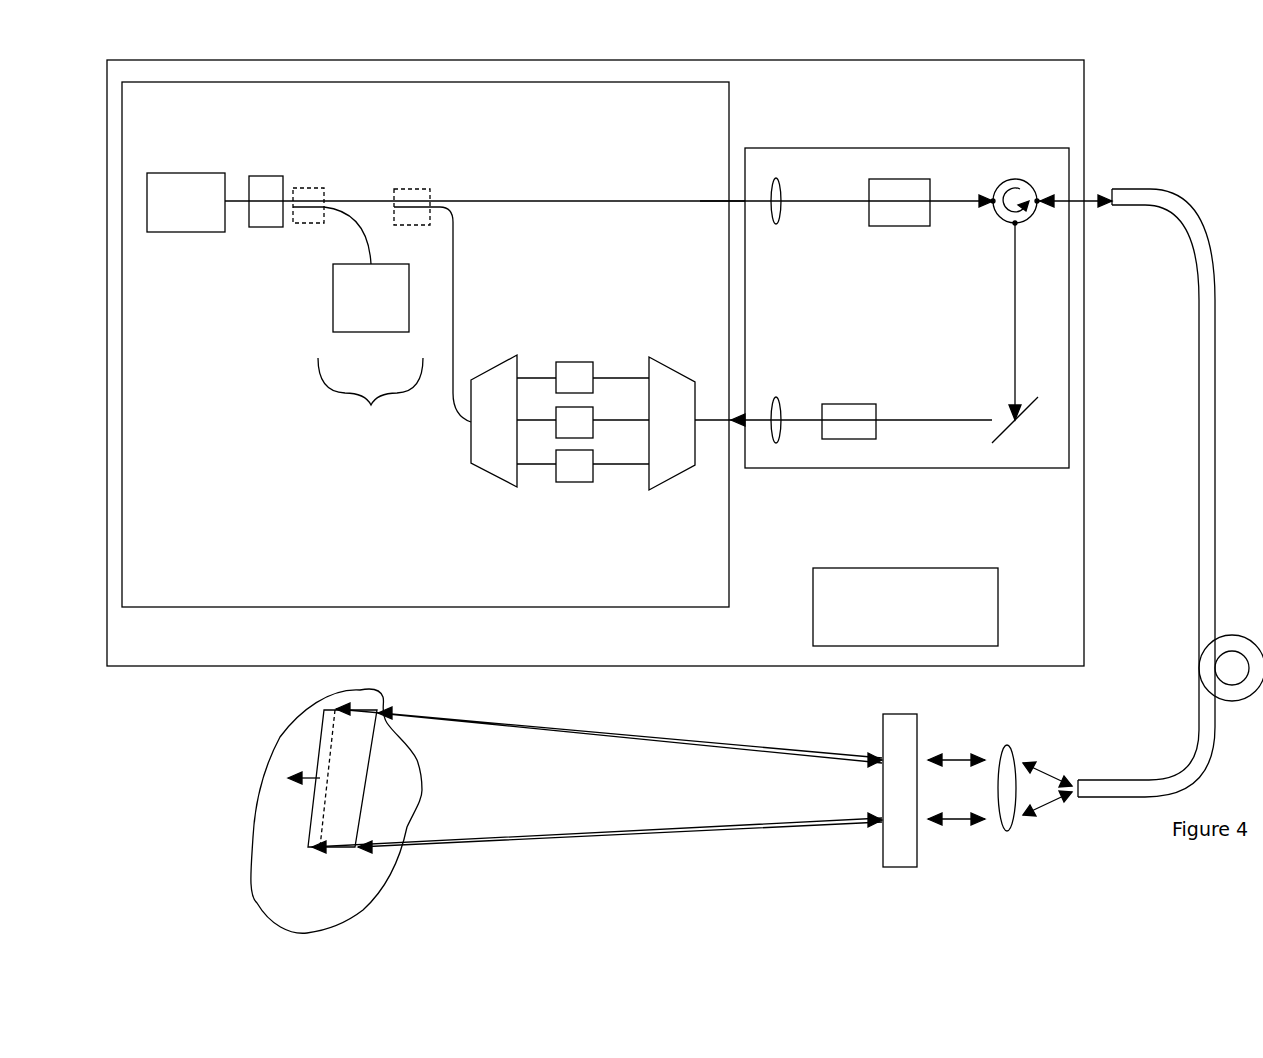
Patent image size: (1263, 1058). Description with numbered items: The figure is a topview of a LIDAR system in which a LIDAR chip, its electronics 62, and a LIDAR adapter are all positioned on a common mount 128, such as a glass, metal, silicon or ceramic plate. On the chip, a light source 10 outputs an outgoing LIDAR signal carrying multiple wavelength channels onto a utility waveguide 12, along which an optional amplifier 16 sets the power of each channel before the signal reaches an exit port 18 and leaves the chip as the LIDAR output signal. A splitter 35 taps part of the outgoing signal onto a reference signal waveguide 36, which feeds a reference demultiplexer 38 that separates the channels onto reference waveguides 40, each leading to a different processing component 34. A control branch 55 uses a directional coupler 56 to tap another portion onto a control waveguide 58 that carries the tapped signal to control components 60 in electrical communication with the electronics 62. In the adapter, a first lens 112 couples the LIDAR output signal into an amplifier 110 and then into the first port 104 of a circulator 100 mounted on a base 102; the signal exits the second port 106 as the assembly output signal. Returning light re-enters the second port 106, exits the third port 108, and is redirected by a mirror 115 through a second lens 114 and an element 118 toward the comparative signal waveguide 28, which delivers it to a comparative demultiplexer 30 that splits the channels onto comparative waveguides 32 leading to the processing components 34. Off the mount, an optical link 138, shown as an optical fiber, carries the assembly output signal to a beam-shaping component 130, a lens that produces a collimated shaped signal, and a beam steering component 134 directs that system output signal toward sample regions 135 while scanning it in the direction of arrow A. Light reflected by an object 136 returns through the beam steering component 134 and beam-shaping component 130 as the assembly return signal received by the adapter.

The light source 10 is at (167, 232).
The utility waveguide 12 is at (636, 203).
The amplifier 16 is at (266, 176).
The exit port 18 is at (728, 200).
The comparative signal waveguide 28 is at (720, 425).
The comparative demultiplexer 30 is at (672, 370).
The comparative waveguides 32 is at (611, 378).
The processing components 34 is at (566, 362).
The splitter 35 is at (425, 189).
The reference signal waveguide 36 is at (455, 318).
The reference demultiplexer 38 is at (470, 445).
The reference waveguides 40 is at (531, 375).
The control branch 55 is at (370, 400).
The directional coupler 56 is at (312, 188).
The control waveguide 58 is at (356, 232).
The control components 60 is at (333, 296).
The electronics 62 is at (813, 590).
The circulator 100 is at (1000, 178).
The base 102 is at (943, 148).
The first port 104 is at (990, 206).
The second port 106 is at (1039, 198).
The third port 108 is at (1012, 230).
The amplifier 110 is at (893, 226).
The first lens 112 is at (782, 215).
The second lens 114 is at (778, 400).
The mirror 115 is at (1022, 412).
The optical element 118 is at (876, 430).
The common mount 128 is at (995, 68).
The beam-shaping component 130 is at (1010, 745).
The beam steering component 134 is at (903, 714).
The sample regions 135 is at (553, 733).
The object 136 is at (283, 735).
The optical link 138 is at (1198, 700).
The scan direction arrow A is at (305, 780).